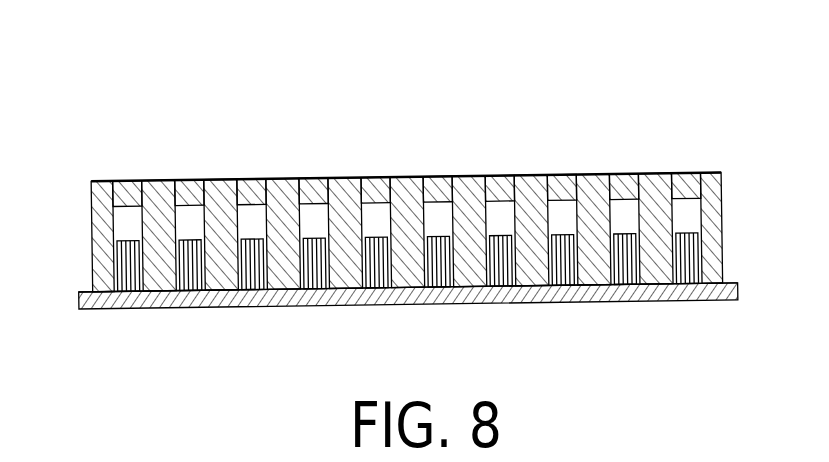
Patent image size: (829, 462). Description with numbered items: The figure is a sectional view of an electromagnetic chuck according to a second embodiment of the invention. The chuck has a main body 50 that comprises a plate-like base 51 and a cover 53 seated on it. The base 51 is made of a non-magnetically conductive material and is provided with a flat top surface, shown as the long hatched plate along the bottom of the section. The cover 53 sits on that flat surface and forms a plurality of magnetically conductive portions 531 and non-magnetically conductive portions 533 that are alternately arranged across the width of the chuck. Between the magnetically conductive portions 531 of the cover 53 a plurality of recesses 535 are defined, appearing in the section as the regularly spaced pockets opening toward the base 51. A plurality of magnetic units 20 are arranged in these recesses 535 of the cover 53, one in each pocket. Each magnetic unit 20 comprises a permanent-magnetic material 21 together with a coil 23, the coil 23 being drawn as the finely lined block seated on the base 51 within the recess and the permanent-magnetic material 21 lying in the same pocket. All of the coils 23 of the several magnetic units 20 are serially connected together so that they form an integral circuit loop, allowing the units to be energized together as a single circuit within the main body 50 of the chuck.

The main body 50 is at (405, 211).
The cover 53 is at (397, 195).
The magnetically conductive portions 531 is at (287, 186).
The non-magnetically conductive portions 533 is at (326, 178).
The recesses 535 is at (188, 215).
The magnetic units 20 is at (408, 321).
The permanent-magnetic material 21 is at (356, 264).
The coil 23 is at (381, 287).
The base 51 is at (113, 308).